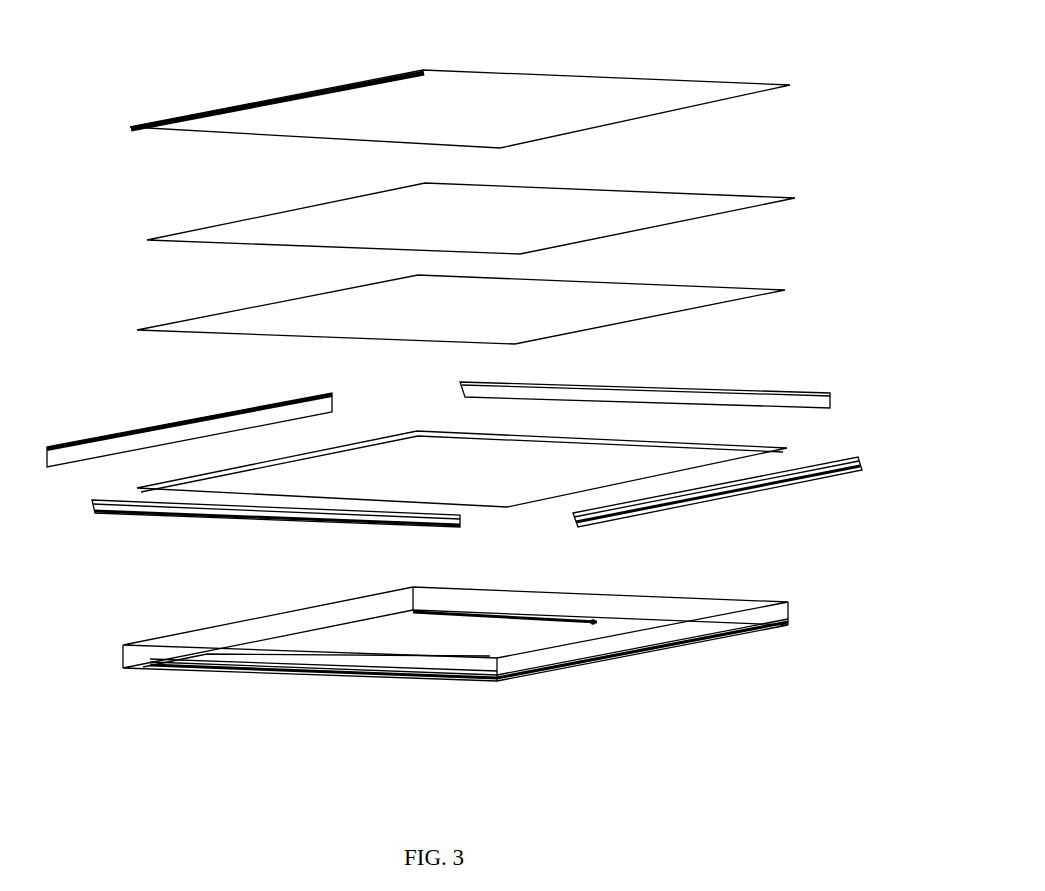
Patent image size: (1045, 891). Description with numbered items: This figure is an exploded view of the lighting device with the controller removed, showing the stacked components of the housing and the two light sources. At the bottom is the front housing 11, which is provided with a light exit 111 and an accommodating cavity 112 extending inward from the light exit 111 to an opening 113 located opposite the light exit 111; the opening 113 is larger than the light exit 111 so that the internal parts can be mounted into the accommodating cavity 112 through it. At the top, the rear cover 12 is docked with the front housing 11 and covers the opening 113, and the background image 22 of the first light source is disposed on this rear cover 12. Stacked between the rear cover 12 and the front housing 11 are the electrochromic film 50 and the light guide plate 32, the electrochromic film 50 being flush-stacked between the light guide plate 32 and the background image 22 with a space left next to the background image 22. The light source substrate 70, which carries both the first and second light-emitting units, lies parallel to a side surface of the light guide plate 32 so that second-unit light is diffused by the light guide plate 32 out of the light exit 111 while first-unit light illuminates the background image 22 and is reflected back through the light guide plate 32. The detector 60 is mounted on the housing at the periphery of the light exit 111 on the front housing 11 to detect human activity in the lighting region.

The rear cover 12 is at (610, 82).
The background image 22 is at (707, 200).
The electrochromic film 50 is at (685, 295).
The light guide plate 32 is at (690, 457).
The light source substrate 70 is at (723, 497).
The detector 60 is at (597, 625).
The front housing 11 is at (215, 690).
The light exit 111 is at (490, 684).
The accommodating cavity 112 is at (460, 666).
The opening 113 is at (455, 657).